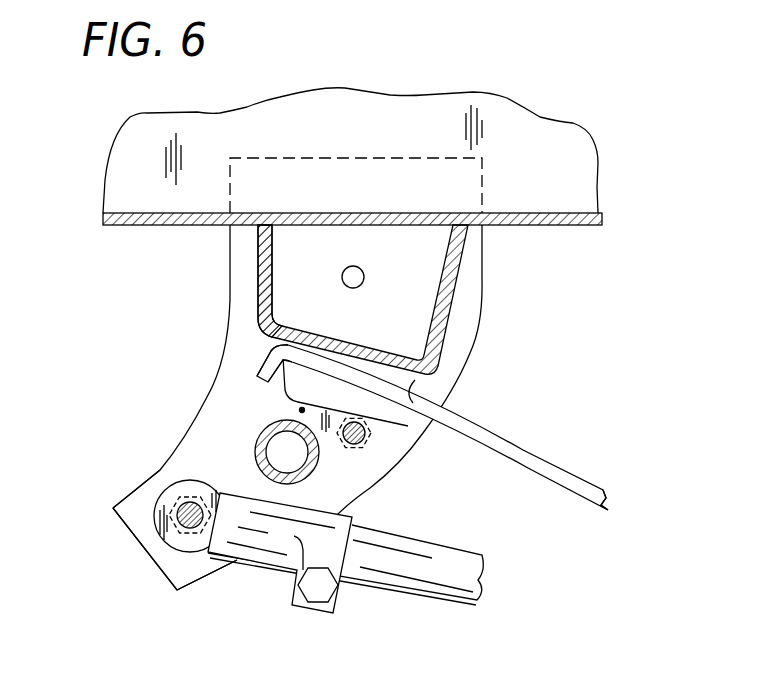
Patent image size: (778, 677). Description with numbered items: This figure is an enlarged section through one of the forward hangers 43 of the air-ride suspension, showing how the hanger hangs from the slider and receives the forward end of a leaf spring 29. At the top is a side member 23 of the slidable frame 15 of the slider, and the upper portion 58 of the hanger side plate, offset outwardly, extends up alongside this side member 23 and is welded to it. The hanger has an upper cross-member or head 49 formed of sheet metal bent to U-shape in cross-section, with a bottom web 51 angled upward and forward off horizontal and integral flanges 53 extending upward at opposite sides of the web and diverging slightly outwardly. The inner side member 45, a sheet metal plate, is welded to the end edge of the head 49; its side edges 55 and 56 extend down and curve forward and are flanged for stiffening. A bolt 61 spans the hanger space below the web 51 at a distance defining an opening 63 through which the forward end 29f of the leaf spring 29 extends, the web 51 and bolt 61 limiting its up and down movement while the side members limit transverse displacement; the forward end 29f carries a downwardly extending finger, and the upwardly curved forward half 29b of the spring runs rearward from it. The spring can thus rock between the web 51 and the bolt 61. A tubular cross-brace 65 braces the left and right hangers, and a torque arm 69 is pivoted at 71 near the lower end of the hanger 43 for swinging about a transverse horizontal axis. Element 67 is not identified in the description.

The slidable frame 15 is at (583, 232).
The side member 23 is at (587, 188).
The leaf spring 29 is at (407, 422).
The forward half of the spring 29b is at (603, 488).
The forward end of the spring 29f is at (268, 360).
The hanger 43 is at (147, 526).
The inner side member 45 is at (135, 500).
The upper cross-member or head 49 is at (246, 260).
The bottom web 51 is at (354, 299).
The flange 53 is at (354, 299).
The side edge of side member 55 is at (334, 407).
The side edge of side member 56 is at (482, 332).
The upper portion of the side plate 58 is at (312, 157).
The bolt 61 is at (367, 440).
The opening 63 is at (300, 410).
The tubular cross-brace 65 is at (253, 447).
The rod retaining tab 67 is at (427, 402).
The torque arm 69 is at (468, 602).
The pivot 71 is at (178, 532).